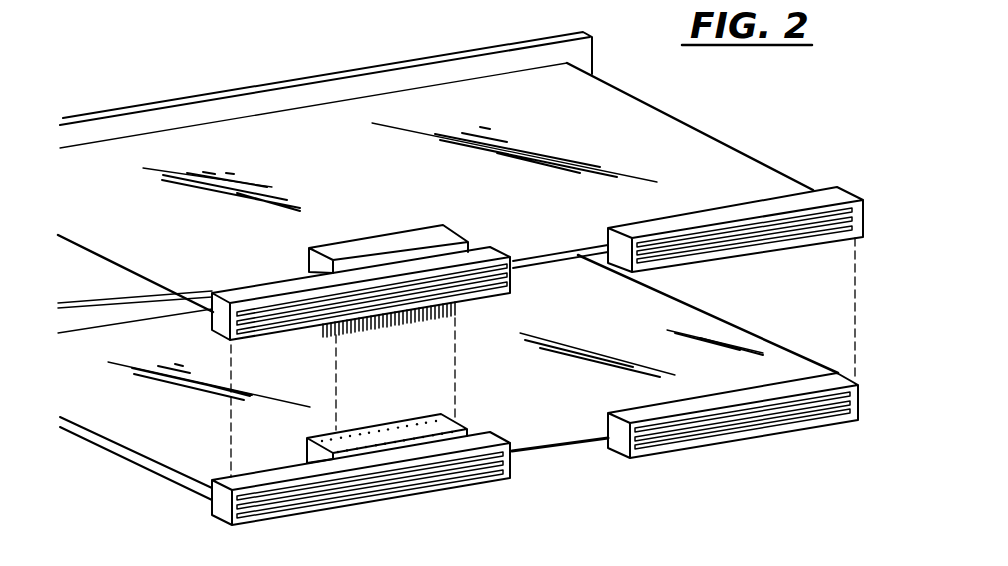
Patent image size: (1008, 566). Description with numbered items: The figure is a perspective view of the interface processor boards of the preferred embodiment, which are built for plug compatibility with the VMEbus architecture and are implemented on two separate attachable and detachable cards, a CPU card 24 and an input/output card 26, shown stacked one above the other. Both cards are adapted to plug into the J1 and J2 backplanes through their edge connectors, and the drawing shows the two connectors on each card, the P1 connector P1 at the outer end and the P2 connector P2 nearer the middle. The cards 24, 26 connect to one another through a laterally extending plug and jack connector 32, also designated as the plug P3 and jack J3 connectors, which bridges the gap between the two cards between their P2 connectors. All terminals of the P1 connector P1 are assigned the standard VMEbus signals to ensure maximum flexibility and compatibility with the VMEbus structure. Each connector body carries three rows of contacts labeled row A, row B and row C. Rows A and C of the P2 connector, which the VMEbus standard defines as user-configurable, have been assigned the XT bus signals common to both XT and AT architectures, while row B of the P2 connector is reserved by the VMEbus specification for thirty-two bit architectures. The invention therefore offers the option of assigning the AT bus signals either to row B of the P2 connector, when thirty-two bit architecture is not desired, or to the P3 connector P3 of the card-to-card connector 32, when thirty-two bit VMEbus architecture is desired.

The input/output card 26 is at (130, 268).
The CPU card 24 is at (122, 461).
The plug and jack connector 32 is at (388, 428).
The P1 connector P1 is at (858, 380).
The P2 connector P2 is at (218, 497).
The P3 connector P3 is at (465, 315).
The row A is at (280, 303).
The row B is at (268, 316).
The row C is at (258, 328).